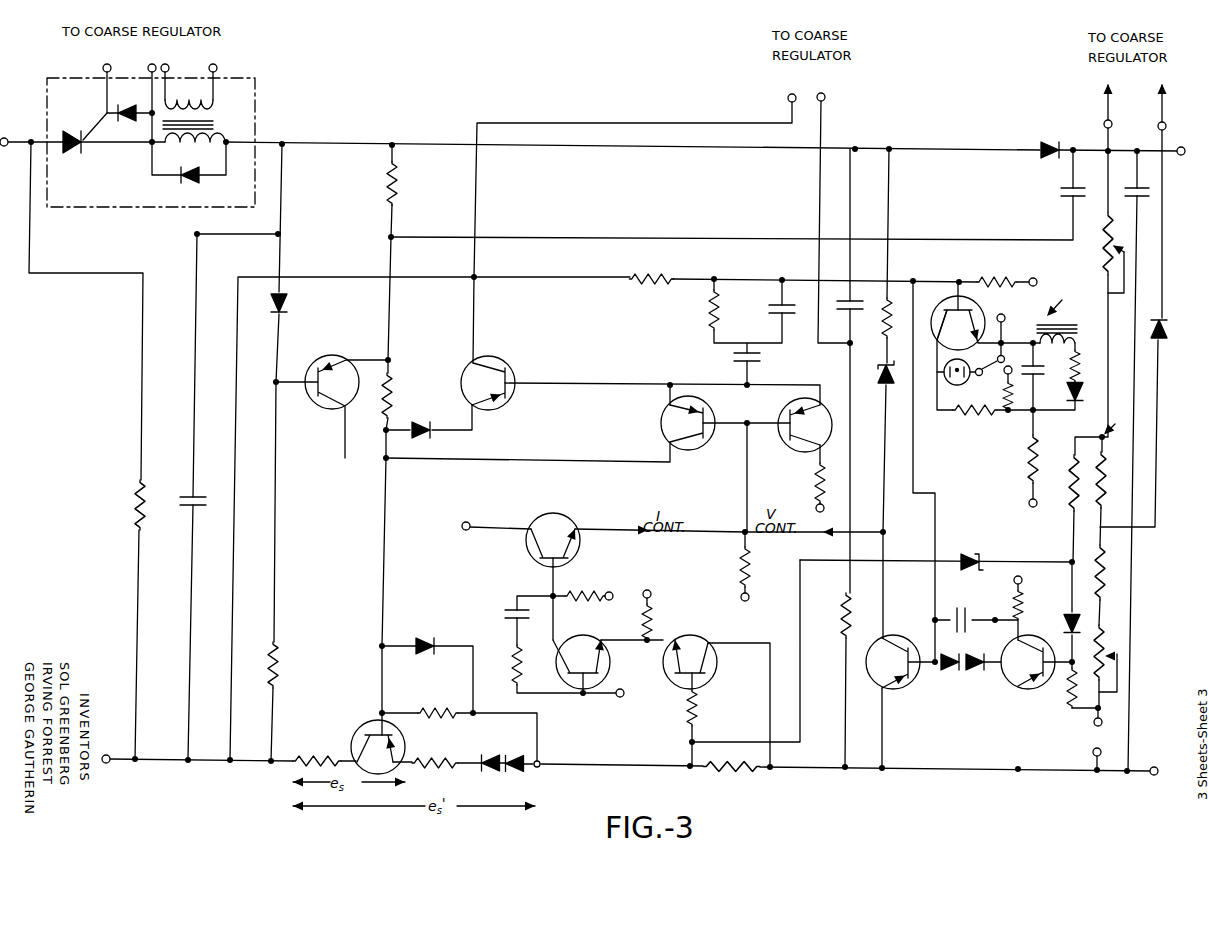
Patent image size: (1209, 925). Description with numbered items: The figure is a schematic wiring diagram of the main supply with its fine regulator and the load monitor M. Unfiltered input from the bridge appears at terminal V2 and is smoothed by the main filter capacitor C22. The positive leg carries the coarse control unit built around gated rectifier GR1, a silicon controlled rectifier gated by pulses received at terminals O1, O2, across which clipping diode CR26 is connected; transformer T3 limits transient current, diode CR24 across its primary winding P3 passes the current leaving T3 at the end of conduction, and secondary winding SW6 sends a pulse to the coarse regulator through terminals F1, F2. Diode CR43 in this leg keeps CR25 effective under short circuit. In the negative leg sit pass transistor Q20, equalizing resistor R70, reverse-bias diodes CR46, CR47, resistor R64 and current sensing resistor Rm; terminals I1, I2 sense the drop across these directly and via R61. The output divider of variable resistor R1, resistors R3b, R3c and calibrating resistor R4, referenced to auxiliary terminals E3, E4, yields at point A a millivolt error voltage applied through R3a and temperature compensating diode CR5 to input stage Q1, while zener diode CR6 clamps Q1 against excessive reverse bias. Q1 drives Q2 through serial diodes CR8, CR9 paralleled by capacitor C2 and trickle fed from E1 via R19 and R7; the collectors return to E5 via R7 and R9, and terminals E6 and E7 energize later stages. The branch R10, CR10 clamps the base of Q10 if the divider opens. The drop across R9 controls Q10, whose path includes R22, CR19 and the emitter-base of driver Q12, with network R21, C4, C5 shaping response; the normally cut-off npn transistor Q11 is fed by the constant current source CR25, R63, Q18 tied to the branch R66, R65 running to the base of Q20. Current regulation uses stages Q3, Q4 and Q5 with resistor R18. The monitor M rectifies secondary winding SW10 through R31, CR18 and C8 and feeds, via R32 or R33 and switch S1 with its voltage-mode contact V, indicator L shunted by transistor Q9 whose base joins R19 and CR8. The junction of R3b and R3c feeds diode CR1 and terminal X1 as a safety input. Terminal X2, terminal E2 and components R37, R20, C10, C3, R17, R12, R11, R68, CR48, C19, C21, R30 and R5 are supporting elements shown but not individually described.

The gated rectifier GR1 is at (87, 146).
The clipping diode CR26 is at (131, 105).
The diode CR24 is at (189, 162).
The secondary winding SW6 is at (189, 98).
The transformer T3 is at (200, 123).
The primary winding P3 is at (195, 148).
The terminal O1 is at (97, 87).
The terminal O2 is at (142, 101).
The terminal F1 is at (173, 79).
The terminal F2 is at (222, 79).
The terminal I1 is at (783, 91).
The terminal I2 is at (828, 90).
The terminal X1 is at (1171, 120).
The terminal X2 is at (1117, 120).
The input terminal V2 is at (108, 749).
The V contact V is at (1013, 363).
The auxiliary supply terminal E1 is at (828, 430).
The terminal E2 is at (461, 538).
The auxiliary supply terminal E3 is at (858, 528).
The auxiliary supply terminal E4 is at (1106, 719).
The auxiliary supply terminal E5 is at (832, 586).
The auxiliary supply terminal E6 is at (754, 600).
The auxiliary supply terminal E7 is at (926, 502).
The resistor R37 is at (122, 505).
The main filter capacitor C22 is at (201, 491).
The resistor R63 is at (286, 665).
The diode CR25 is at (299, 308).
The resistor R66 is at (406, 184).
The resistor R65 is at (401, 395).
The diode CR19 is at (436, 441).
The resistor R20 is at (652, 269).
The resistor R21 is at (726, 310).
The capacitor C4 is at (775, 296).
The capacitor C5 is at (754, 366).
The capacitor C10 is at (844, 296).
The resistor R10 is at (899, 318).
The diode CR10 is at (899, 384).
The resistor R22 is at (803, 483).
The resistor R9 is at (729, 567).
The resistor R61 is at (834, 615).
The resistor R18 is at (585, 589).
The capacitor C3 is at (508, 608).
The resistor R17 is at (528, 665).
The resistor R12 is at (659, 622).
The resistor R11 is at (704, 708).
The current sensing resistor Rm is at (732, 780).
The resistor R64 is at (317, 752).
The equalizing resistor R70 is at (435, 752).
The resistor R68 is at (438, 702).
The diode CR48 is at (430, 637).
The diode CR46 is at (492, 774).
The diode CR47 is at (516, 753).
The diode CR43 is at (1038, 142).
The capacitor C19 is at (1062, 190).
The capacitor C21 is at (1138, 180).
The variable resistor R1 is at (1100, 244).
The diode CR1 is at (1171, 326).
The resistor R19 is at (997, 273).
The load monitor M is at (1059, 304).
The secondary winding SW10 is at (1058, 345).
The switch S1 is at (988, 360).
The indicator L is at (956, 381).
The resistor R32 is at (999, 396).
The resistor R33 is at (975, 420).
The capacitor C8 is at (1038, 378).
The resistor R31 is at (1086, 366).
The rectifier diode CR18 is at (1074, 408).
The resistor R30 is at (1019, 459).
The point A is at (1112, 421).
The resistor R3a is at (1063, 483).
The resistor R3b is at (1112, 480).
The resistor R3c is at (1111, 572).
The variable calibrating resistor R4 is at (1096, 652).
The resistor R5 is at (1062, 692).
The diode CR5 is at (1059, 610).
The zener diode CR6 is at (969, 551).
The capacitor C2 is at (965, 610).
The resistor R7 is at (1008, 605).
The diode CR8 is at (946, 673).
The diode CR9 is at (980, 651).
The transistor Q18 is at (332, 406).
The driver transistor Q12 is at (499, 387).
The npn transistor Q11 is at (700, 423).
The transistor Q10 is at (802, 435).
The transistor Q5 is at (553, 535).
The transistor Q4 is at (581, 658).
The transistor Q3 is at (690, 656).
The pass transistor Q20 is at (369, 742).
The transistor Q9 is at (985, 306).
The transistor Q2 is at (900, 677).
The input stage transistor Q1 is at (1032, 666).